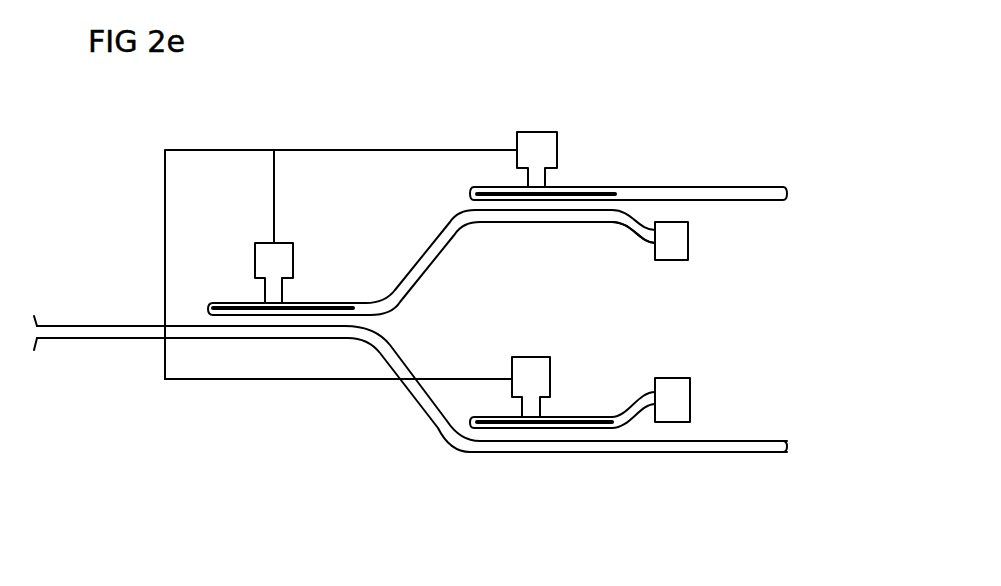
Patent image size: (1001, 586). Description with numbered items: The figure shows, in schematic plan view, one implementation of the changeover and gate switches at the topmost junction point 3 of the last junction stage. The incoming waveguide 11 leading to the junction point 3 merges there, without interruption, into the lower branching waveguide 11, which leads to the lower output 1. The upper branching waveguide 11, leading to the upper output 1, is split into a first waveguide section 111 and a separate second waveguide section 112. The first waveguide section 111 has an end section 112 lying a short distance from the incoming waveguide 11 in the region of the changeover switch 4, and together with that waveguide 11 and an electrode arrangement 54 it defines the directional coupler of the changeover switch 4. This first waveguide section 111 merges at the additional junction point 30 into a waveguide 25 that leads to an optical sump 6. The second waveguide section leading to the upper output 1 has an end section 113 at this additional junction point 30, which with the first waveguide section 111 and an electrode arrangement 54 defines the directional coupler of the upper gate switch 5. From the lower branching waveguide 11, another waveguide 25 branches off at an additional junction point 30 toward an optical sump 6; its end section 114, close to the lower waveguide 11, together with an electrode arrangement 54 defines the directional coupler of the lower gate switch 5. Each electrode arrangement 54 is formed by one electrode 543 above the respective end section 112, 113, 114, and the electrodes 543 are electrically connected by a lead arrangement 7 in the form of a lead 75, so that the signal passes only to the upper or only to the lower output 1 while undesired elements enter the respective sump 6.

The output 1 is at (787, 189).
The junction point 3 is at (186, 279).
The changeover switch 4 is at (322, 282).
The gate switch 5 is at (573, 160).
The optical sump 6 is at (689, 239).
The lead arrangement 7 is at (277, 388).
The waveguide 11 is at (99, 340).
The first waveguide section 111 is at (409, 255).
The end section 112 is at (226, 303).
The end section 113 is at (486, 178).
The end section 114 is at (599, 417).
The waveguide 25 is at (632, 233).
The additional junction point 30 is at (546, 110).
The electrode arrangement 54 is at (490, 186).
The lead 75 is at (345, 149).
The electrode 543 is at (597, 188).